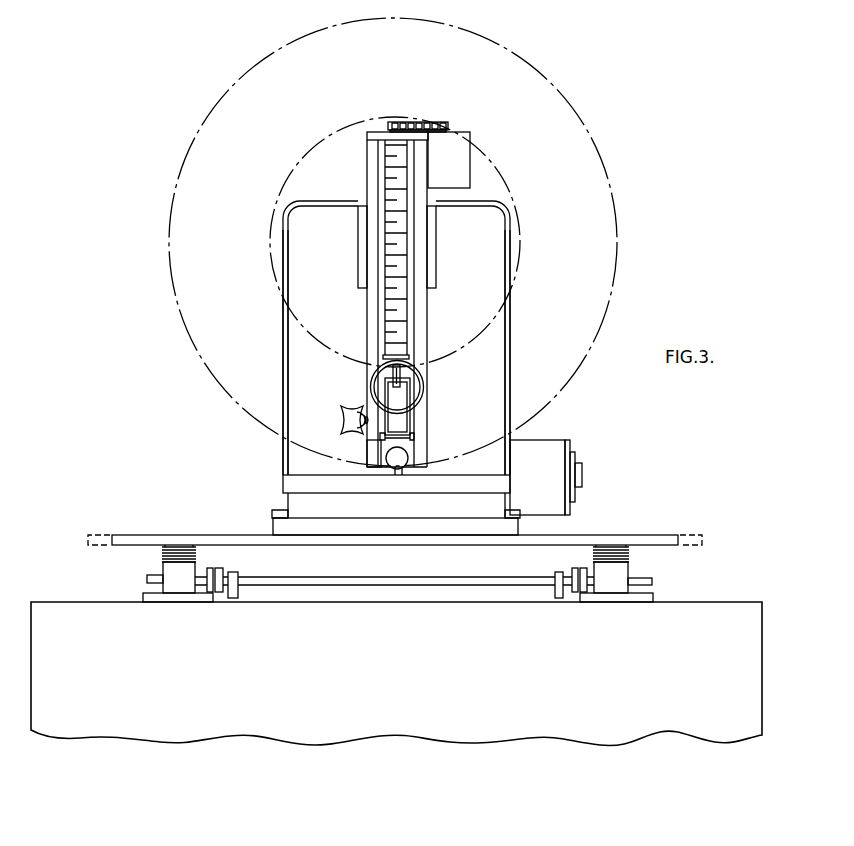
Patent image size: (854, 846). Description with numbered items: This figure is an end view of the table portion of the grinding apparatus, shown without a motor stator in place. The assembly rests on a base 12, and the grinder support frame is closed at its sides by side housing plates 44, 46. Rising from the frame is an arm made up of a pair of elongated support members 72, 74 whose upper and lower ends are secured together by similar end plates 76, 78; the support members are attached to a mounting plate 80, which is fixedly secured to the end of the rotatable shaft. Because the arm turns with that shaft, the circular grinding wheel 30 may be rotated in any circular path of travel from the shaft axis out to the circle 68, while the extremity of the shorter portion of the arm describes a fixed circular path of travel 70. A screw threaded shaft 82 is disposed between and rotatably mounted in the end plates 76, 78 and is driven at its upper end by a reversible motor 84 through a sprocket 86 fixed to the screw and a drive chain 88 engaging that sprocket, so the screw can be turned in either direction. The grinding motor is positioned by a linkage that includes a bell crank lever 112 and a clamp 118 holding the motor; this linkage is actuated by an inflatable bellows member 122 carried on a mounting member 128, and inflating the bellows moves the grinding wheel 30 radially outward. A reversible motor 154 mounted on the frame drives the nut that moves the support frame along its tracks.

The base 12 is at (388, 676).
The circular grinding wheel 30 is at (394, 455).
The side housing plate 44 is at (510, 346).
The side housing plate 46 is at (283, 346).
The circle 68 is at (617, 251).
The fixed circular path of travel 70 is at (512, 224).
The elongated support member 72 is at (367, 176).
The elongated support member 74 is at (419, 172).
The end plate 76 is at (376, 133).
The end plate 78 is at (427, 467).
The mounting plate 80 is at (436, 262).
The screw threaded shaft 82 is at (390, 233).
The reversible motor 84 is at (470, 163).
The sprocket 86 is at (398, 122).
The drive chain 88 is at (441, 122).
The bell crank lever 112 is at (389, 390).
The clamp 118 is at (408, 440).
The inflatable bellows member 122 is at (421, 386).
The mounting member 128 is at (393, 373).
The reversible motor 154 is at (554, 442).